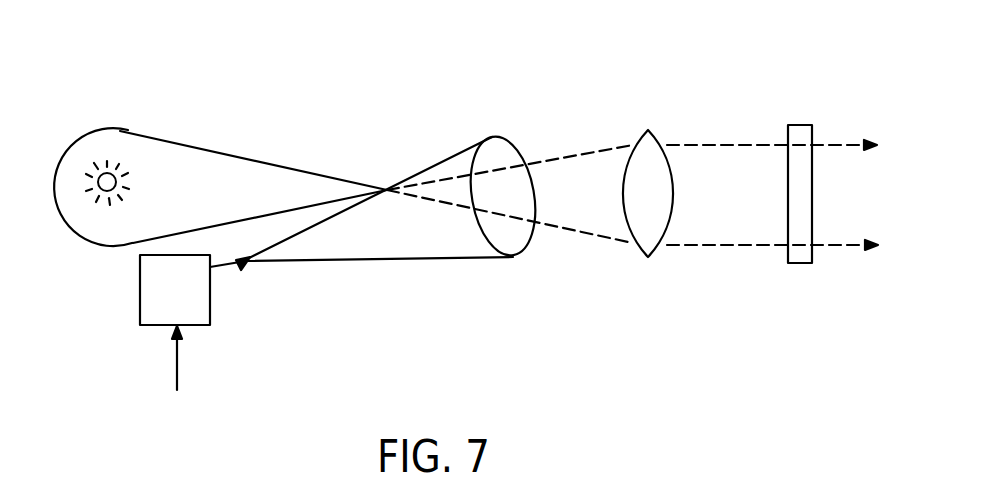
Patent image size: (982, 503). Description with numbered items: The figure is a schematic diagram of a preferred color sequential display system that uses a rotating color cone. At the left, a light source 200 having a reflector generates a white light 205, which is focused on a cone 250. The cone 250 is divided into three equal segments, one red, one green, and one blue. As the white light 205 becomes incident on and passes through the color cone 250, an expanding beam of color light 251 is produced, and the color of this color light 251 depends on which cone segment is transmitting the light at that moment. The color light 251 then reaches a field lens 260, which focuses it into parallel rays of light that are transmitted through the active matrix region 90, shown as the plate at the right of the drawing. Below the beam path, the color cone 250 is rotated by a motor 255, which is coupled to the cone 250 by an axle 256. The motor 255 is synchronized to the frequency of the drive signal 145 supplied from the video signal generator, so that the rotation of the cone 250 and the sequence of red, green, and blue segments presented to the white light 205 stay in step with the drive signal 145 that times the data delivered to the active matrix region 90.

The light source 200 is at (98, 129).
The white light 205 is at (197, 147).
The cone 250 is at (406, 258).
The color light 251 is at (577, 153).
The motor 255 is at (200, 307).
The axle 256 is at (230, 267).
The field lens 260 is at (641, 248).
The active matrix region 90 is at (802, 264).
The drive signal 145 is at (177, 378).